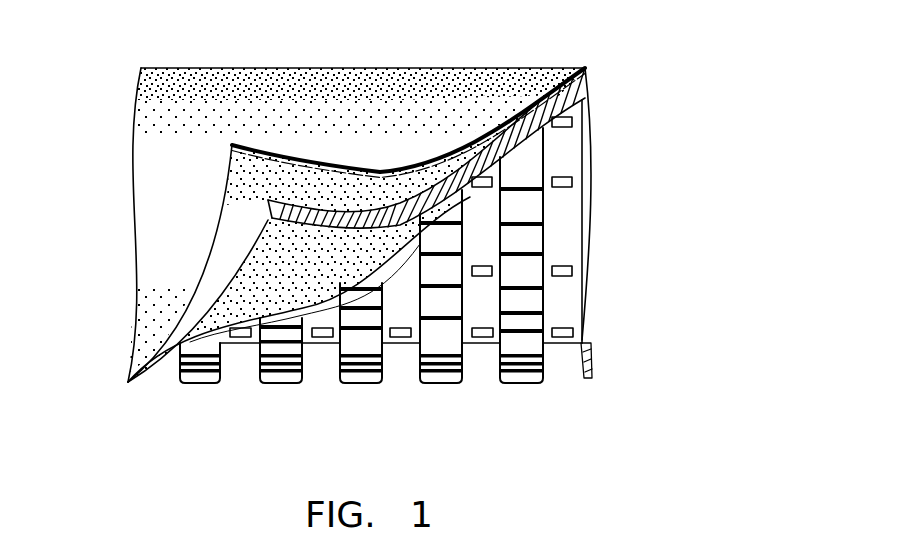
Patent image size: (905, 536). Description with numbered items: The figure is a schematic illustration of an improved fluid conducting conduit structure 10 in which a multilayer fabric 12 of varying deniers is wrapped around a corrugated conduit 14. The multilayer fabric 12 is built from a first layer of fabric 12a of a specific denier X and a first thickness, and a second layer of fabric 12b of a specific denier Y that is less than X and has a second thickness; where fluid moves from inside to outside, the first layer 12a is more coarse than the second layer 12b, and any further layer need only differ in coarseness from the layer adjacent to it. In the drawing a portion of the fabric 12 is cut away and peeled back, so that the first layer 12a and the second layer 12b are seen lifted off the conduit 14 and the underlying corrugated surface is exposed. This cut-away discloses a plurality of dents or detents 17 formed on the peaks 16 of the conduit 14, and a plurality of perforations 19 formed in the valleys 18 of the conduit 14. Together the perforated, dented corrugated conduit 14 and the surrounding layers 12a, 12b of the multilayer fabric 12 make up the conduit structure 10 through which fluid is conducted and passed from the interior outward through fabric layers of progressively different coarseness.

The fluid conducting conduit structure 10 is at (661, 73).
The multilayer fabric 12 is at (105, 352).
The first layer of fabric 12a is at (262, 222).
The second layer of fabric 12b is at (231, 146).
The corrugated conduit 14 is at (571, 382).
The peaks 16 is at (284, 384).
The dents or detents 17 is at (527, 186).
The valleys 18 is at (403, 308).
The perforations 19 is at (482, 263).